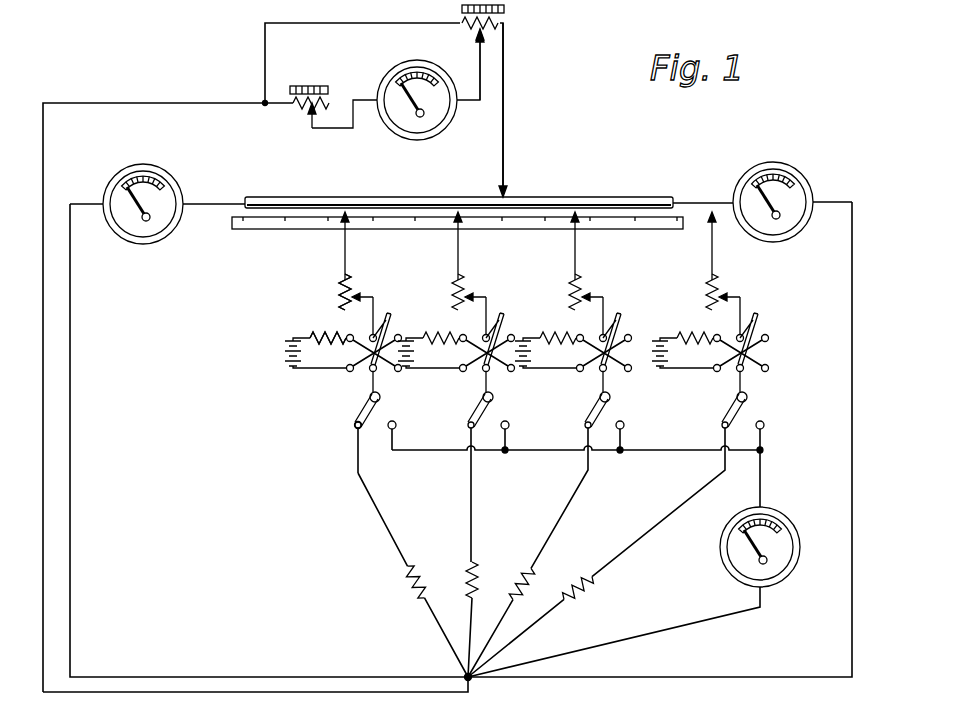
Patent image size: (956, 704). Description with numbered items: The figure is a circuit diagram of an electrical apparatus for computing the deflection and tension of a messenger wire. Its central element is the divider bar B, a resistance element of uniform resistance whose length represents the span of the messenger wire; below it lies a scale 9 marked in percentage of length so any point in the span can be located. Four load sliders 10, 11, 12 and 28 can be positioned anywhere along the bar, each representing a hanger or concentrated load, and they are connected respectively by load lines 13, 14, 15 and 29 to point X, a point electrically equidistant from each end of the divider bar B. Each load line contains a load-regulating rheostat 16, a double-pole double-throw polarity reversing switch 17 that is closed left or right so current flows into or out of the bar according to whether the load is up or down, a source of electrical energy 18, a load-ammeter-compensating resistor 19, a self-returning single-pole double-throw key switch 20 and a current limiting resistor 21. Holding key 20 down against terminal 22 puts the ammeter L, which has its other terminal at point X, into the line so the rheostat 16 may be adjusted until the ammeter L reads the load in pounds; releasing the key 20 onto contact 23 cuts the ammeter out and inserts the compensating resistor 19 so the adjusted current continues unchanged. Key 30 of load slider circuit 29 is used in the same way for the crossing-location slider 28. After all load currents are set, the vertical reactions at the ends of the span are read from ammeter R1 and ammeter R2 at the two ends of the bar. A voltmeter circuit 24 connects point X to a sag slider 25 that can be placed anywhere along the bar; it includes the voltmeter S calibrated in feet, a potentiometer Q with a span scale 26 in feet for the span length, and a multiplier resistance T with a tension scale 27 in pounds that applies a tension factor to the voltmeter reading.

The scale 9 is at (266, 229).
The load slider 10 is at (346, 228).
The load slider 11 is at (459, 228).
The load slider 12 is at (576, 228).
The load line 13 is at (378, 512).
The load line 14 is at (474, 498).
The load line 15 is at (580, 485).
The load-regulating rheostat 16 is at (338, 292).
The double-pole double-throw polarity reversing switch 17 is at (372, 352).
The source of electrical energy 18 is at (286, 360).
The load-ammeter-compensating resistor 19 is at (412, 588).
The single-pole double-throw key switch 20 is at (366, 410).
The current limiting resistor 21 is at (318, 332).
The terminal 22 is at (398, 422).
The contact 23 is at (356, 432).
The voltmeter circuit 24 is at (166, 103).
The slider 25 is at (510, 176).
The span scale 26 is at (506, 10).
The tension scale 27 is at (264, 101).
The load slider 28 is at (718, 214).
The load line 29 is at (690, 498).
The key 30 is at (748, 410).
The divider bar B is at (380, 197).
The potentiometer Q is at (494, 37).
The resistance T is at (300, 110).
The voltmeter S is at (450, 128).
The ammeter R1 is at (138, 245).
The ammeter R2 is at (805, 238).
The ammeter L is at (800, 550).
The point X is at (472, 681).